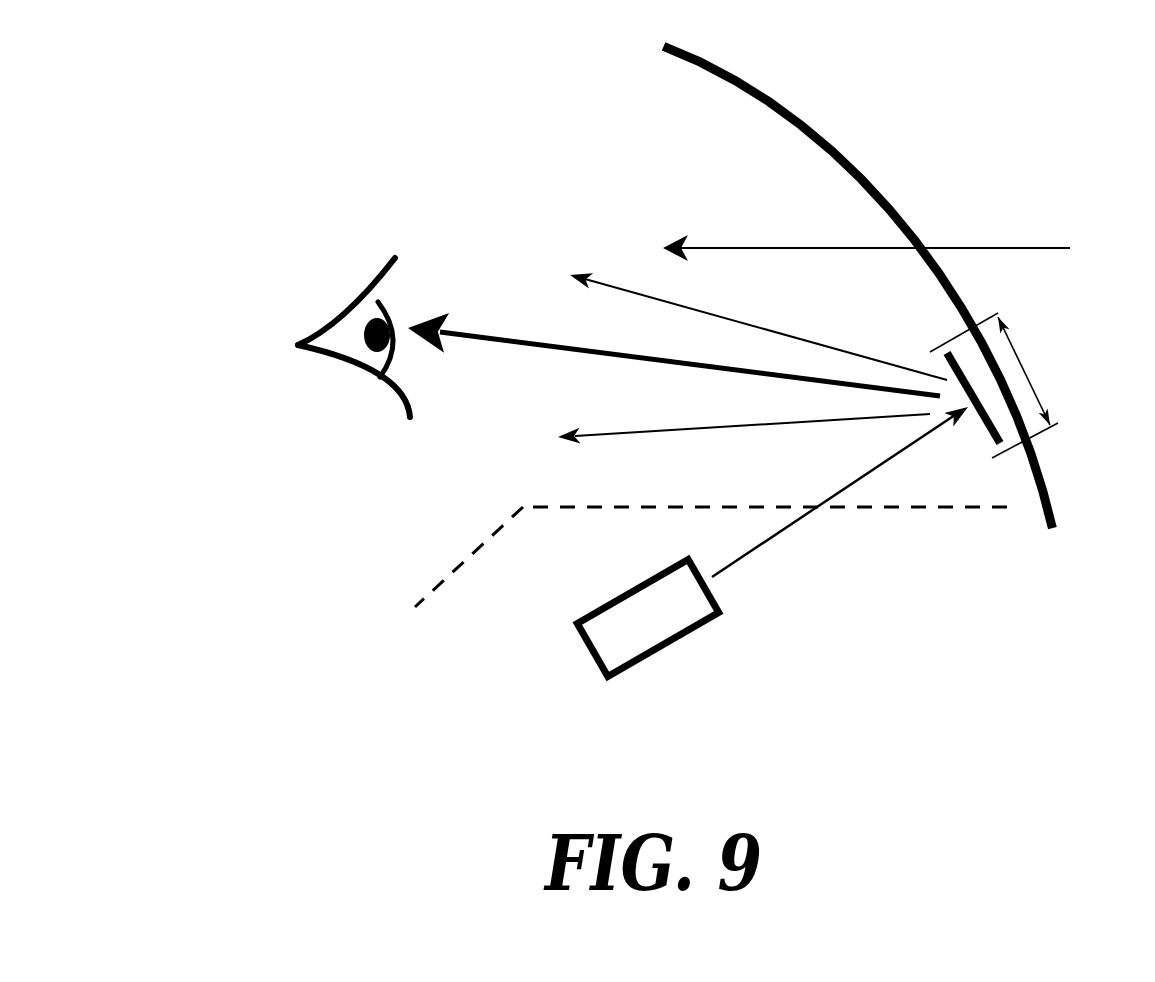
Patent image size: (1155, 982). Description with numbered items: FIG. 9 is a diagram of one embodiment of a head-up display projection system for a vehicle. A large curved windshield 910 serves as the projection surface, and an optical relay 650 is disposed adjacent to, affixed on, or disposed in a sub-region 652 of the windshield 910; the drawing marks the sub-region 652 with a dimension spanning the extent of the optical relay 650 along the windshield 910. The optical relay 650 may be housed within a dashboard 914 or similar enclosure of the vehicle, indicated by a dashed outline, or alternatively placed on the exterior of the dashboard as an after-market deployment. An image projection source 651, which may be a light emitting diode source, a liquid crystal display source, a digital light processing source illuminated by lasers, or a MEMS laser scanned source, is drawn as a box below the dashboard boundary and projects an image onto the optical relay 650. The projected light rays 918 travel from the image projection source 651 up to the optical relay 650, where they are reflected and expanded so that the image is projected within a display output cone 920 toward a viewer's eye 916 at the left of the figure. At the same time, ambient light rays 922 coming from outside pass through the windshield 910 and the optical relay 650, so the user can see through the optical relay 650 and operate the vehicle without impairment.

The windshield 910 is at (737, 70).
The ambient light rays 922 is at (957, 247).
The optical relay 650 is at (945, 370).
The sub-region 652 is at (1018, 377).
The display output cone 920 is at (628, 290).
The viewer's eye 916 is at (345, 313).
The dashboard 914 is at (452, 573).
The image projection source 651 is at (648, 612).
The light rays 918 is at (773, 535).